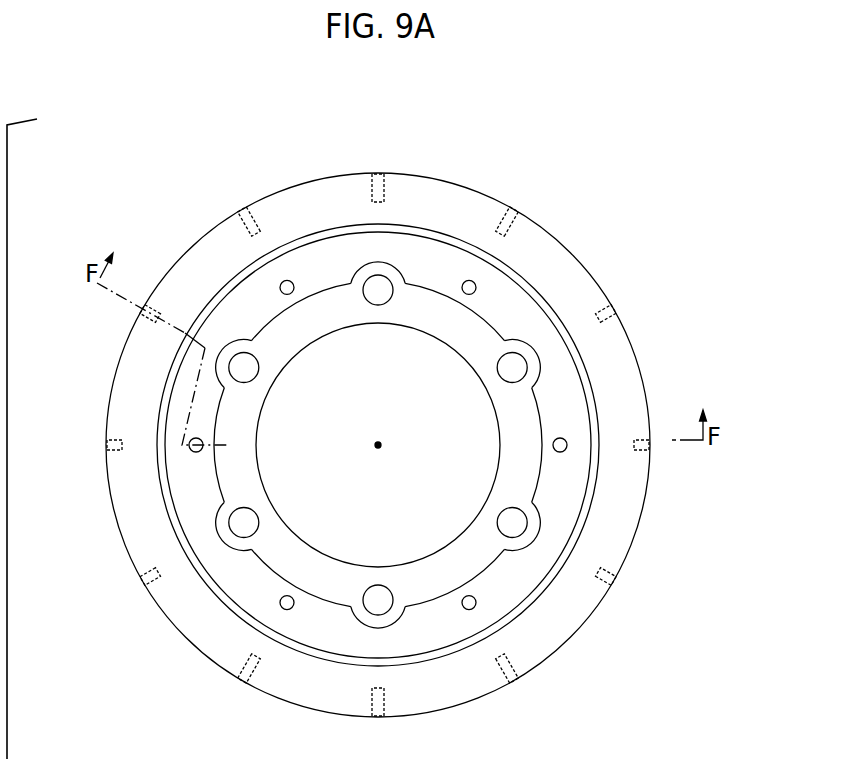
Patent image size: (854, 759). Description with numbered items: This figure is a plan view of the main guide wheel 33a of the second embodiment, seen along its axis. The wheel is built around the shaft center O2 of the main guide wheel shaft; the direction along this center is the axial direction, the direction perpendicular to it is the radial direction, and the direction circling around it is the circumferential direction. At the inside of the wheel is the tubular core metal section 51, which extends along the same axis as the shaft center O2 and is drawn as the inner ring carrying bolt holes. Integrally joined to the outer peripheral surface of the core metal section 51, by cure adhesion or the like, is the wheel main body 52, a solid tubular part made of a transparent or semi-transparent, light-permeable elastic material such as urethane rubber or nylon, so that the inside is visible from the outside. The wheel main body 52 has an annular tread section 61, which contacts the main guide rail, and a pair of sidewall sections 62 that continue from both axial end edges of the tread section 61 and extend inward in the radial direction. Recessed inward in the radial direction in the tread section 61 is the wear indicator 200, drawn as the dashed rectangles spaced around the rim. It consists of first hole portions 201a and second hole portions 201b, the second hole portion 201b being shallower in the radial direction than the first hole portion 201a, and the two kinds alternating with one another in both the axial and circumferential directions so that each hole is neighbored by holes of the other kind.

The wheel main body 52 is at (530, 213).
The core metal section 51 is at (510, 303).
The main guide wheel 33a is at (608, 252).
The sidewall section 62 is at (600, 295).
The tread section 61 is at (620, 313).
The wear indicator 200 is at (689, 516).
The first hole portion 201a is at (660, 575).
The second hole portion 201b is at (651, 444).
The shaft center O2 is at (381, 443).